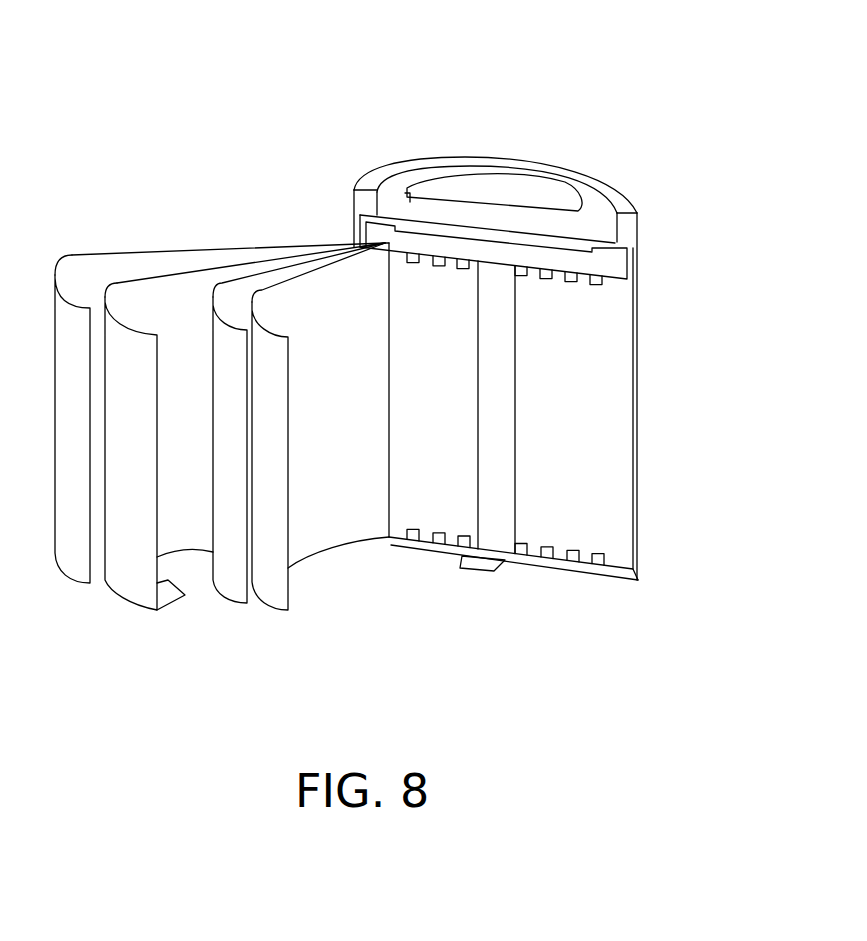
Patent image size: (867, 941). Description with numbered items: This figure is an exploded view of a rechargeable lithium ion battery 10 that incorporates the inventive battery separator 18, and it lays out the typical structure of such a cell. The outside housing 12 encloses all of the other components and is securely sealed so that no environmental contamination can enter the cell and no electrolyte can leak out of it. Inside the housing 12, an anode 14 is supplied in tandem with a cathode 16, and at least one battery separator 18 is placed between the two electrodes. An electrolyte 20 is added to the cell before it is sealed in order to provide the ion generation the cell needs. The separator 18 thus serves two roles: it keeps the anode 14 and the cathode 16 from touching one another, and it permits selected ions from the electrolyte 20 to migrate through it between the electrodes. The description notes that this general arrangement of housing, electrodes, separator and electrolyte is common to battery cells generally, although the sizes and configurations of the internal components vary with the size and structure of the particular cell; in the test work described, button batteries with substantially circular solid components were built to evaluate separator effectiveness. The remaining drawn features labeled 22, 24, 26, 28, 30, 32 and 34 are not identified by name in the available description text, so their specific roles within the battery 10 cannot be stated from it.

The battery 10 is at (105, 95).
The outside housing 12 is at (645, 536).
The anode 14 is at (112, 590).
The cathode 16 is at (275, 610).
The battery separator 18 is at (203, 270).
The electrolyte 20 is at (177, 605).
The recess 22 is at (418, 245).
The bottom tab 24 is at (402, 547).
The handle opening 26 is at (498, 188).
The retaining teeth 28 is at (600, 283).
The top wall 30 is at (547, 222).
The upper plate 32 is at (637, 235).
The side wall 34 is at (365, 198).